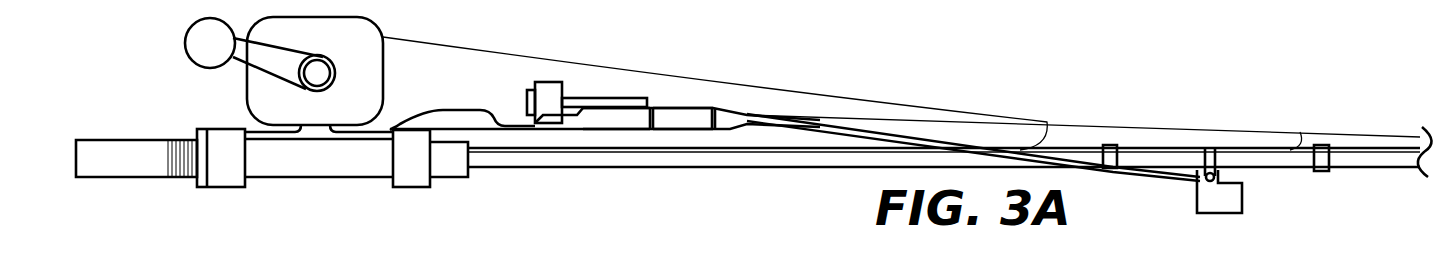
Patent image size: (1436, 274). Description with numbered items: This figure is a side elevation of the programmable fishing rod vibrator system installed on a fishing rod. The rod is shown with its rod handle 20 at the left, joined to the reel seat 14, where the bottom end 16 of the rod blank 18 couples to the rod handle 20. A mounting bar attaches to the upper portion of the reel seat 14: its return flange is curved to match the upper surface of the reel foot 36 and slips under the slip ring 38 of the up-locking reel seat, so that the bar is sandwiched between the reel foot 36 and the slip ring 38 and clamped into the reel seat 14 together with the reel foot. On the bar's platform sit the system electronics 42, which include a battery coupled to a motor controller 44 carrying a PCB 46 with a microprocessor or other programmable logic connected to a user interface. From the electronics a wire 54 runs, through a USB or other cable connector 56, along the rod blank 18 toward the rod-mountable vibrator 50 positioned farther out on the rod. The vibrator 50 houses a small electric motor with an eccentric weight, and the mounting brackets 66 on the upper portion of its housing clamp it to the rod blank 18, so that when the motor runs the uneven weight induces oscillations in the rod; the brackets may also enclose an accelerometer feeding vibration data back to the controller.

The reel seat 14 is at (332, 163).
The bottom end 16 is at (495, 167).
The rod blank 18 is at (777, 158).
The rod handle 20 is at (112, 163).
The reel foot 36 is at (384, 130).
The slip ring 38 is at (410, 147).
The system electronics 42 is at (550, 80).
The motor controller 44 is at (627, 118).
The PCB 46 is at (607, 100).
The rod-mountable vibrator 50 is at (1195, 185).
The wire 54 is at (837, 125).
The cable connector 56 is at (685, 120).
The mounting brackets 66 is at (1213, 162).